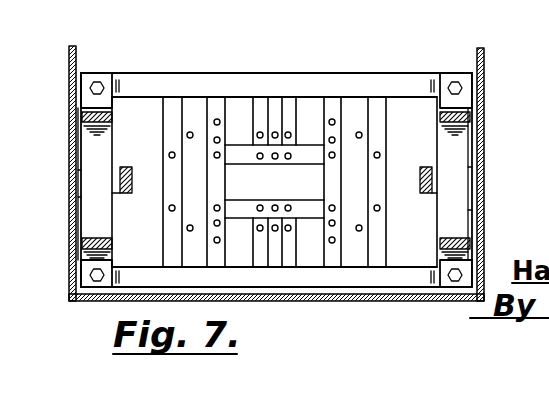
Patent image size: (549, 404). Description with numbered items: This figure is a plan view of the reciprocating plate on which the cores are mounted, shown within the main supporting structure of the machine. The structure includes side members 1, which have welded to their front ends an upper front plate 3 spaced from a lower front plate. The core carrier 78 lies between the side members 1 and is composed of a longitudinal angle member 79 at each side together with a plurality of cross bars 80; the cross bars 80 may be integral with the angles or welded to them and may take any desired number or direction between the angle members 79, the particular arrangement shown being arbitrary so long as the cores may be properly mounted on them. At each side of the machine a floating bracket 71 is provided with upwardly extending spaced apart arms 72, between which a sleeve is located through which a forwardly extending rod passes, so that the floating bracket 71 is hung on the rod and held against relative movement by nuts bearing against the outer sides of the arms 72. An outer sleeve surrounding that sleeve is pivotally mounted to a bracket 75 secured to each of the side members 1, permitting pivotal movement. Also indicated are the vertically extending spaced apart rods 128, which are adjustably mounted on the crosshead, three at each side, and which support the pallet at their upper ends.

The side member 1 is at (69, 206).
The upper front plate 3 is at (348, 301).
The floating bracket 71 is at (92, 148).
The arm 72 is at (83, 114).
The bracket 75 is at (128, 166).
The core carrier 78 is at (343, 63).
The longitudinal angle member 79 is at (241, 73).
The cross bar 80 is at (288, 247).
The rod 128 is at (188, 138).